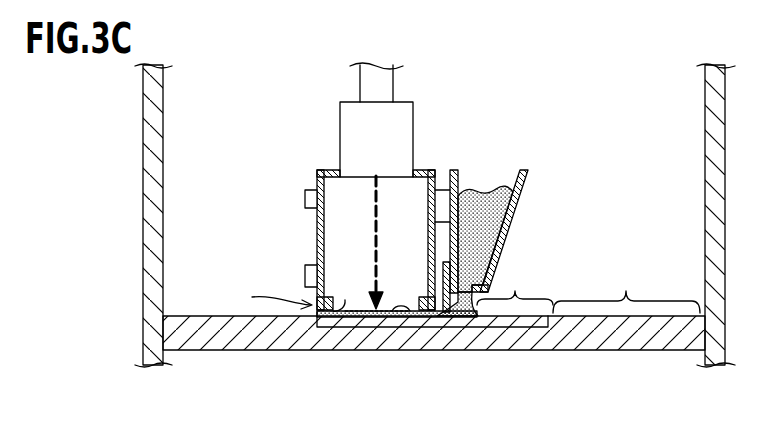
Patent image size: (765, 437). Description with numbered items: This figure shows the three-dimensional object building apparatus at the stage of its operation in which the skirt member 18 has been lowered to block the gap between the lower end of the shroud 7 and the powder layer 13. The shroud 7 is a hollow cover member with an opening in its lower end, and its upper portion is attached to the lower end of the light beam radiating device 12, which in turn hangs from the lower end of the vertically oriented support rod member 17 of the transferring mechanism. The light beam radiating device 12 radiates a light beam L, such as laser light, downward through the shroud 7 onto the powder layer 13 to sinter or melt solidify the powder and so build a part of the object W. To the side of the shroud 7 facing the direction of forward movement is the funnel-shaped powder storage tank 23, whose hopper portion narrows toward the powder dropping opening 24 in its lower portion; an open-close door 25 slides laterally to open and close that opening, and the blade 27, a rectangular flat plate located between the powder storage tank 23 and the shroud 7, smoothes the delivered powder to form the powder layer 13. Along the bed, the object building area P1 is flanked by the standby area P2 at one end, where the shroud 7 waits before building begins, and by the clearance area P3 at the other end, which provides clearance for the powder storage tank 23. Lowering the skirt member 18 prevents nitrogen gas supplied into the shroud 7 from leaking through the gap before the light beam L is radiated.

The shroud 7 is at (313, 233).
The light beam radiating device 12 is at (407, 137).
The powder layer 13 is at (397, 320).
The support rod member 17 is at (385, 88).
The skirt member 18 is at (342, 320).
The powder storage tank 23 is at (527, 172).
The powder dropping opening 24 is at (467, 320).
The open-close door 25 is at (477, 278).
The blade 27 is at (428, 320).
The light beam L is at (378, 260).
The object W is at (377, 320).
The object building area P1 is at (515, 286).
The standby area P2 is at (263, 299).
The clearance area P3 is at (626, 287).